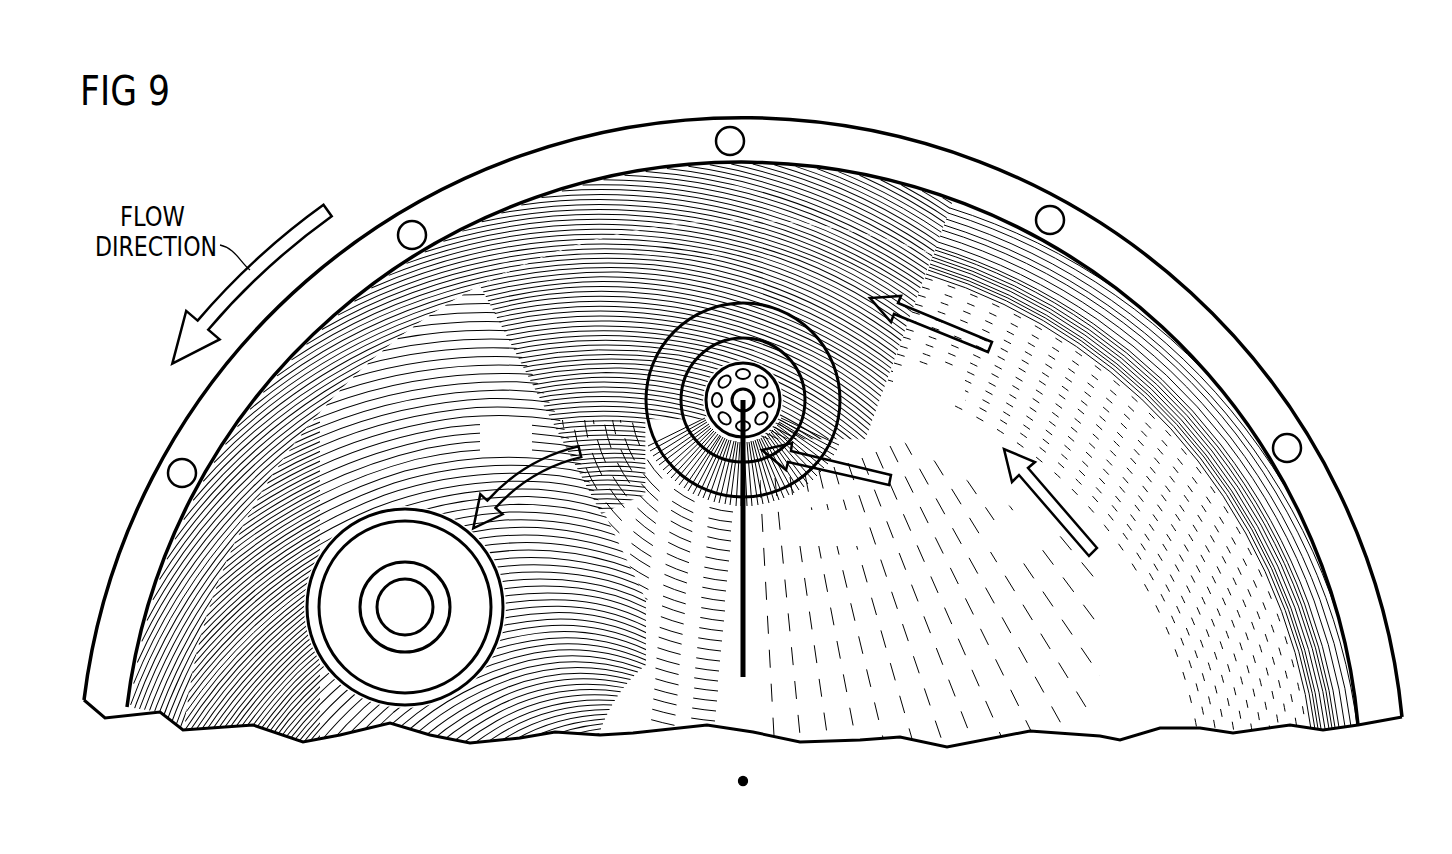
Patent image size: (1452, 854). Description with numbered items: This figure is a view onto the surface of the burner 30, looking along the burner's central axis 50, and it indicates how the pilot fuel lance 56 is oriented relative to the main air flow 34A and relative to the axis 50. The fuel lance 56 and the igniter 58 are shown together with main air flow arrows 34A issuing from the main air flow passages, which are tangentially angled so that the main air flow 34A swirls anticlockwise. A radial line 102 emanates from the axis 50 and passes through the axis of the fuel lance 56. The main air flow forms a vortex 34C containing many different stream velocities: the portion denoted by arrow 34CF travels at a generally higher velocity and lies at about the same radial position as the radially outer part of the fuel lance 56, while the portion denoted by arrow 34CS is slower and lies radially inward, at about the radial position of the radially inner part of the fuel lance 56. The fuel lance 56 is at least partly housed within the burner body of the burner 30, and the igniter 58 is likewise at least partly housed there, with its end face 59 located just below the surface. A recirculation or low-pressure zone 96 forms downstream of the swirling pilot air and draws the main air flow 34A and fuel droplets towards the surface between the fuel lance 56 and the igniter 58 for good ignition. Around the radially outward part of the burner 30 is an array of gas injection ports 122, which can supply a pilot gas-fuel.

The burner 30 is at (327, 112).
The main air flow 34A is at (957, 197).
The vortex 34C is at (530, 483).
The main air flow portion 34CF is at (947, 330).
The main air flow portion 34CS is at (845, 472).
The axis 50 is at (747, 782).
The fuel lance 56 is at (744, 338).
The igniter 58 is at (456, 622).
The end face 59 is at (408, 618).
The recirculation zone 96 is at (736, 492).
The radial line 102 is at (742, 655).
The gas injection ports 122 is at (410, 222).